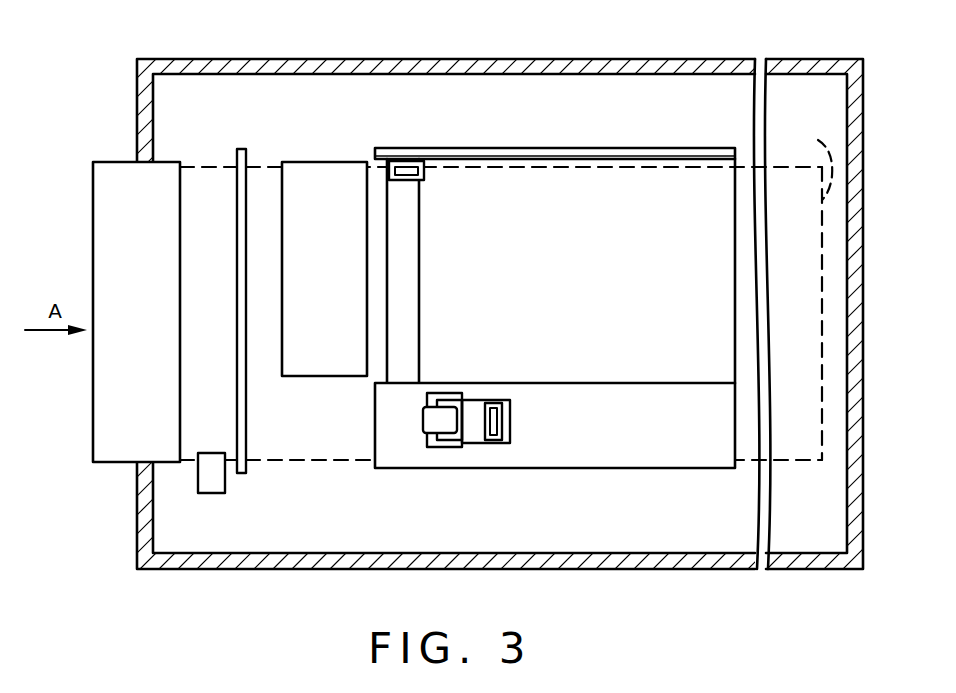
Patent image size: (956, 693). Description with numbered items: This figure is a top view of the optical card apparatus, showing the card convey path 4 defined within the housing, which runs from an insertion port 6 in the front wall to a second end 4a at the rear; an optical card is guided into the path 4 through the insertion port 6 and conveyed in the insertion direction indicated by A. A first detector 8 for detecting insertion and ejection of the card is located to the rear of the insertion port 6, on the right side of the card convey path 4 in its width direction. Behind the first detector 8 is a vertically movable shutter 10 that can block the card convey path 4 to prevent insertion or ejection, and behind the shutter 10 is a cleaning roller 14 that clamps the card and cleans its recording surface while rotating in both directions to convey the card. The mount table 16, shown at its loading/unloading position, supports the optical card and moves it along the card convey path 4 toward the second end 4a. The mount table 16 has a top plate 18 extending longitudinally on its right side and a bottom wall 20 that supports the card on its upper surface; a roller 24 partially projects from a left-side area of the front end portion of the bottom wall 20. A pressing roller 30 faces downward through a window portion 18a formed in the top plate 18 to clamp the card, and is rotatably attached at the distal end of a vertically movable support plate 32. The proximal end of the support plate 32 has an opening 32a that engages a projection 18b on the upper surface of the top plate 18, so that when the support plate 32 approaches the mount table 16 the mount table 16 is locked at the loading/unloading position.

The card convey path 4 is at (208, 165).
The second end 4a is at (809, 162).
The insertion port 6 is at (110, 462).
The first detector 8 is at (222, 478).
The shutter 10 is at (241, 148).
The cleaning roller 14 is at (320, 161).
The mount table 16 is at (545, 148).
The top plate 18 is at (602, 470).
The window portion 18a is at (435, 448).
The projection 18b is at (496, 443).
The bottom wall 20 is at (658, 172).
The roller 24 is at (404, 165).
The pressing roller 30 is at (432, 421).
The support plate 32 is at (478, 400).
The opening 32a is at (502, 419).